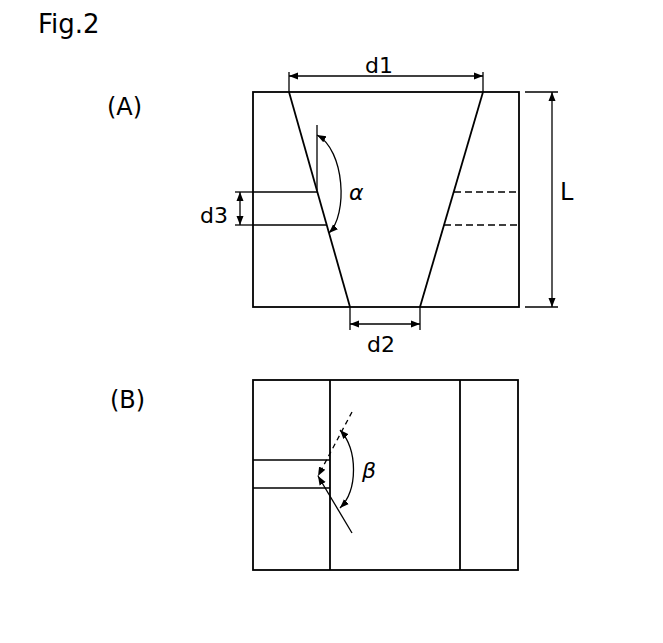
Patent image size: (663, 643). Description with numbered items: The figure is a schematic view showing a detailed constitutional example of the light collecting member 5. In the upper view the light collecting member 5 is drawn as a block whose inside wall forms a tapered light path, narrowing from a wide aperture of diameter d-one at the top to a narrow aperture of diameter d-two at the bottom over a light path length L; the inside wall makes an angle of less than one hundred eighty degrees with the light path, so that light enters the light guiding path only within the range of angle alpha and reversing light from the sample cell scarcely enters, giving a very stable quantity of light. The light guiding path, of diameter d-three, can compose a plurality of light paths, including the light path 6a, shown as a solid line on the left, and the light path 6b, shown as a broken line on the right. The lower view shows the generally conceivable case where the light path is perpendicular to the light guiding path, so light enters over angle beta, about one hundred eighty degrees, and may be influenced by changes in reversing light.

The light collecting member 5 is at (507, 97).
The light path 6a is at (272, 218).
The light path 6b is at (497, 225).